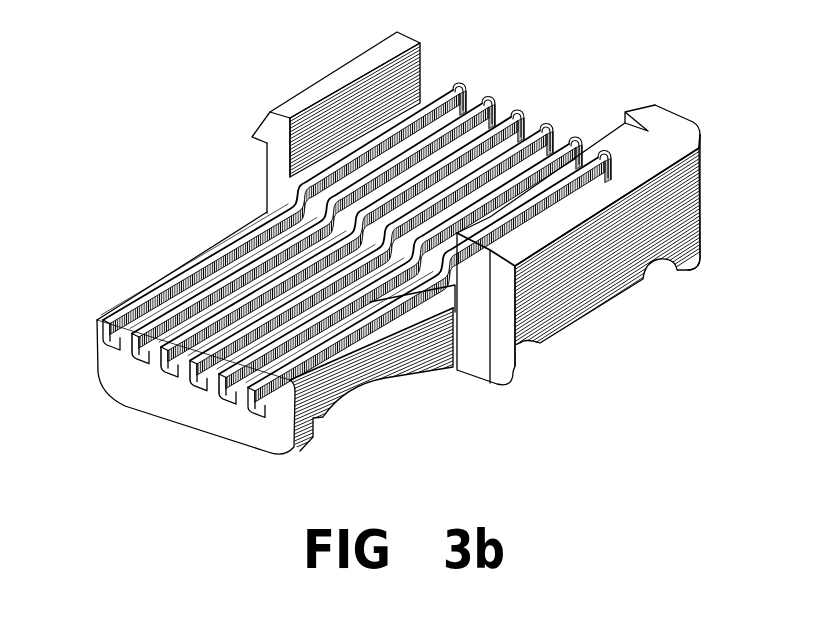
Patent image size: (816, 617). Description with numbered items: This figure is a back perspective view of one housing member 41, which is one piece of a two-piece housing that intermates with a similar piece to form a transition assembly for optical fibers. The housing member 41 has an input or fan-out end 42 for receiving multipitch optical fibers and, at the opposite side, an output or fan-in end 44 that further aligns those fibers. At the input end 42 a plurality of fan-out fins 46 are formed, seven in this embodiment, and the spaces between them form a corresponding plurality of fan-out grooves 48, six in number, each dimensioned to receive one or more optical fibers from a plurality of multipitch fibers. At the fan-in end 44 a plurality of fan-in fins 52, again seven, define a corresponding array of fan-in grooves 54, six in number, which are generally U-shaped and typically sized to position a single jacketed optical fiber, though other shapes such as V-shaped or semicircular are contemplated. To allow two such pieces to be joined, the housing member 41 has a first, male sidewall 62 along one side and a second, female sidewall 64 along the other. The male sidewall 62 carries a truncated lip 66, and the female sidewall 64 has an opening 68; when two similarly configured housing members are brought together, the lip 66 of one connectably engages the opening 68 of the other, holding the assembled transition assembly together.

The housing member 41 is at (190, 66).
The input or fan-out end 42 is at (707, 180).
The output or fan-in end 44 is at (85, 355).
The fan-out fins 46 is at (510, 107).
The fan-out grooves 48 is at (553, 135).
The fan-in fins 52 is at (170, 360).
The fan-in grooves 54 is at (227, 367).
The male sidewall 62 is at (337, 80).
The female sidewall 64 is at (600, 287).
The truncated lip 66 is at (250, 138).
The opening 68 is at (617, 147).